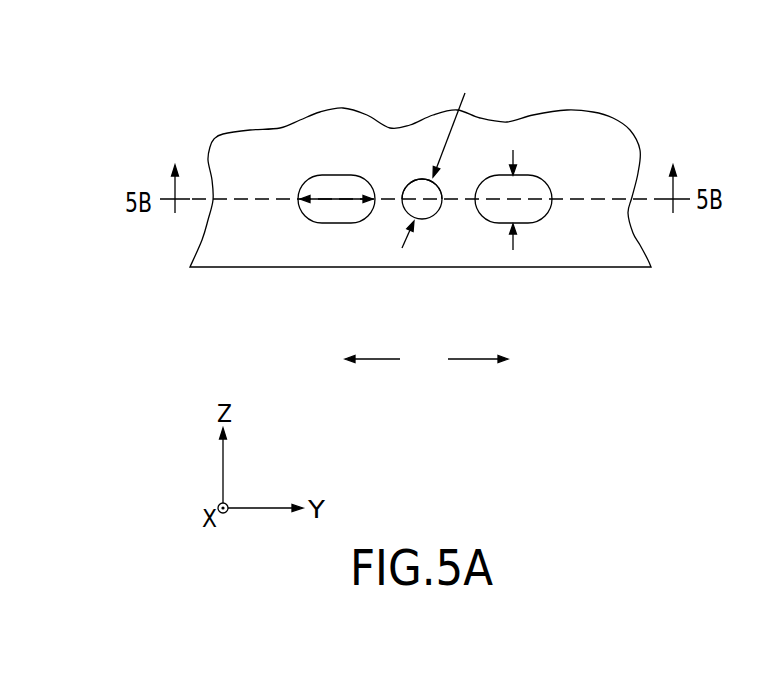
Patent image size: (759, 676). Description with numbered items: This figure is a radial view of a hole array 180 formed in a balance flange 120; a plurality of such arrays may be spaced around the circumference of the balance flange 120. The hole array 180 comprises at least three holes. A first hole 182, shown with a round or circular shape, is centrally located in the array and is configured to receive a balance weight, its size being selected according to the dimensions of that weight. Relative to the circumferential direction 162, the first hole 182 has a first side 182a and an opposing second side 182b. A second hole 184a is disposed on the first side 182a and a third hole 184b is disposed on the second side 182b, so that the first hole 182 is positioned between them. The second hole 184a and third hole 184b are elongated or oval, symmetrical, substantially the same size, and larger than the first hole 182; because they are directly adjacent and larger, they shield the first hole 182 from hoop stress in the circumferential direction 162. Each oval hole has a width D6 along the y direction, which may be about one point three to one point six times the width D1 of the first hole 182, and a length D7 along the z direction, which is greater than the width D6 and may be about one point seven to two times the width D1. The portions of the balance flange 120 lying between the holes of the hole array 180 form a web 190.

The balance flange 120 is at (623, 143).
The hole array 180 is at (183, 136).
The web 190 is at (390, 193).
The first hole 182 is at (432, 218).
The first side 182a is at (402, 197).
The second side 182b is at (442, 198).
The second hole 184a is at (350, 223).
The third hole 184b is at (532, 215).
The circumferential direction 162 is at (426, 361).
The width of first hole D1 is at (442, 156).
The width D6 is at (517, 187).
The length D7 is at (330, 197).